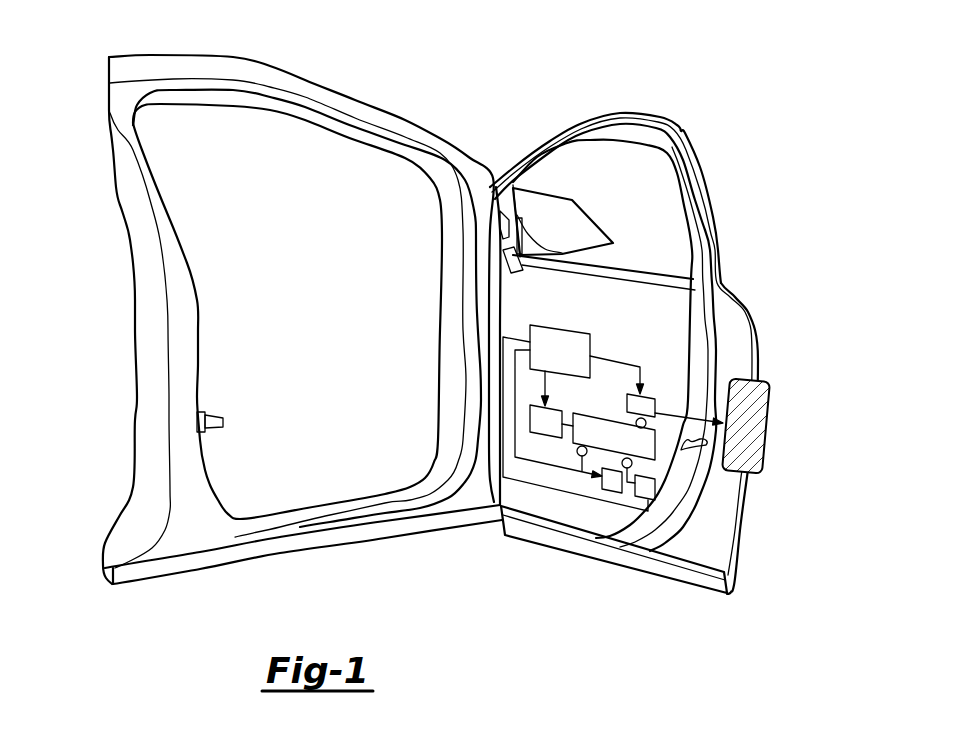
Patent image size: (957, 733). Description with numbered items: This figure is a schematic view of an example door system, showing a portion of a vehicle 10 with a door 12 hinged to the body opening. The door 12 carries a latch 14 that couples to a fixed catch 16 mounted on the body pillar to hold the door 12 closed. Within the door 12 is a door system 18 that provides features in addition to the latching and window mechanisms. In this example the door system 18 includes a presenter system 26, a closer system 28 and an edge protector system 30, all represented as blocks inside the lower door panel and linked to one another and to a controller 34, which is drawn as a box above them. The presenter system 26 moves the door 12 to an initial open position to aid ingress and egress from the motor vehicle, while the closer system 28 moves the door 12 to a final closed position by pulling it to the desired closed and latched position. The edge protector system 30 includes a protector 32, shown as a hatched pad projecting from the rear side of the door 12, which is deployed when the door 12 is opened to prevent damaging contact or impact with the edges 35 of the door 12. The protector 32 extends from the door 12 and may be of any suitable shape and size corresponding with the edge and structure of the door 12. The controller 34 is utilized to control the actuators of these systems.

The vehicle 10 is at (180, 63).
The door 12 is at (723, 313).
The latch 14 is at (692, 459).
The fixed catch 16 is at (223, 435).
The door system 18 is at (588, 507).
The presenter system 26 is at (648, 500).
The closer system 28 is at (608, 492).
The edge protector system 30 is at (657, 394).
The protector 32 is at (750, 423).
The controller 34 is at (572, 366).
The edges 35 is at (744, 508).